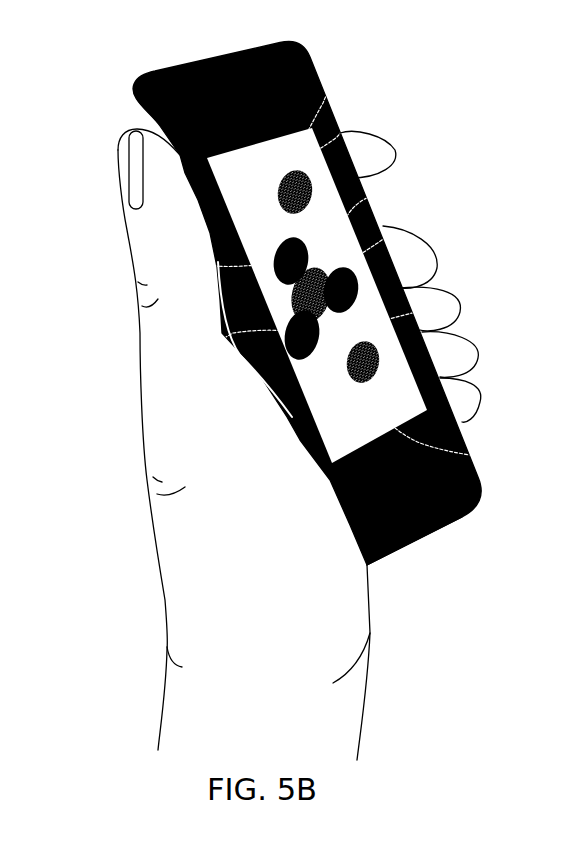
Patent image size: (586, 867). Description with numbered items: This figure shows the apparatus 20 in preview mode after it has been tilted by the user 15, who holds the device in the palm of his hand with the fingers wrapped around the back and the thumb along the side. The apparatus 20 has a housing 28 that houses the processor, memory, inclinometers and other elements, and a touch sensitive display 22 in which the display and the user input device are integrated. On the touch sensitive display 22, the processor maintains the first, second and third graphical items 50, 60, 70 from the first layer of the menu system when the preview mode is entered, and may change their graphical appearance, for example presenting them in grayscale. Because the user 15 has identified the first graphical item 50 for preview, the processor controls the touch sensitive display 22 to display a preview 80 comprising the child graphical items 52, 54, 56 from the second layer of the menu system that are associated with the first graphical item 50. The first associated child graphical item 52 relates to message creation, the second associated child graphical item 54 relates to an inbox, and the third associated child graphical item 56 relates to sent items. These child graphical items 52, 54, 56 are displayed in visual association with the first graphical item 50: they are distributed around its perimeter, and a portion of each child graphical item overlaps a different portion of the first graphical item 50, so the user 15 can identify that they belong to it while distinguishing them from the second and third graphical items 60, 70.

The user 15 is at (342, 708).
The apparatus 20 is at (315, 325).
The touch sensitive display 22 is at (303, 157).
The housing 28 is at (378, 556).
The first graphical item 50 is at (310, 262).
The first associated child graphical item 52 is at (278, 262).
The second associated child graphical item 54 is at (300, 332).
The third associated child graphical item 56 is at (336, 266).
The second graphical item 60 is at (290, 169).
The third graphical item 70 is at (366, 382).
The preview 80 is at (358, 256).